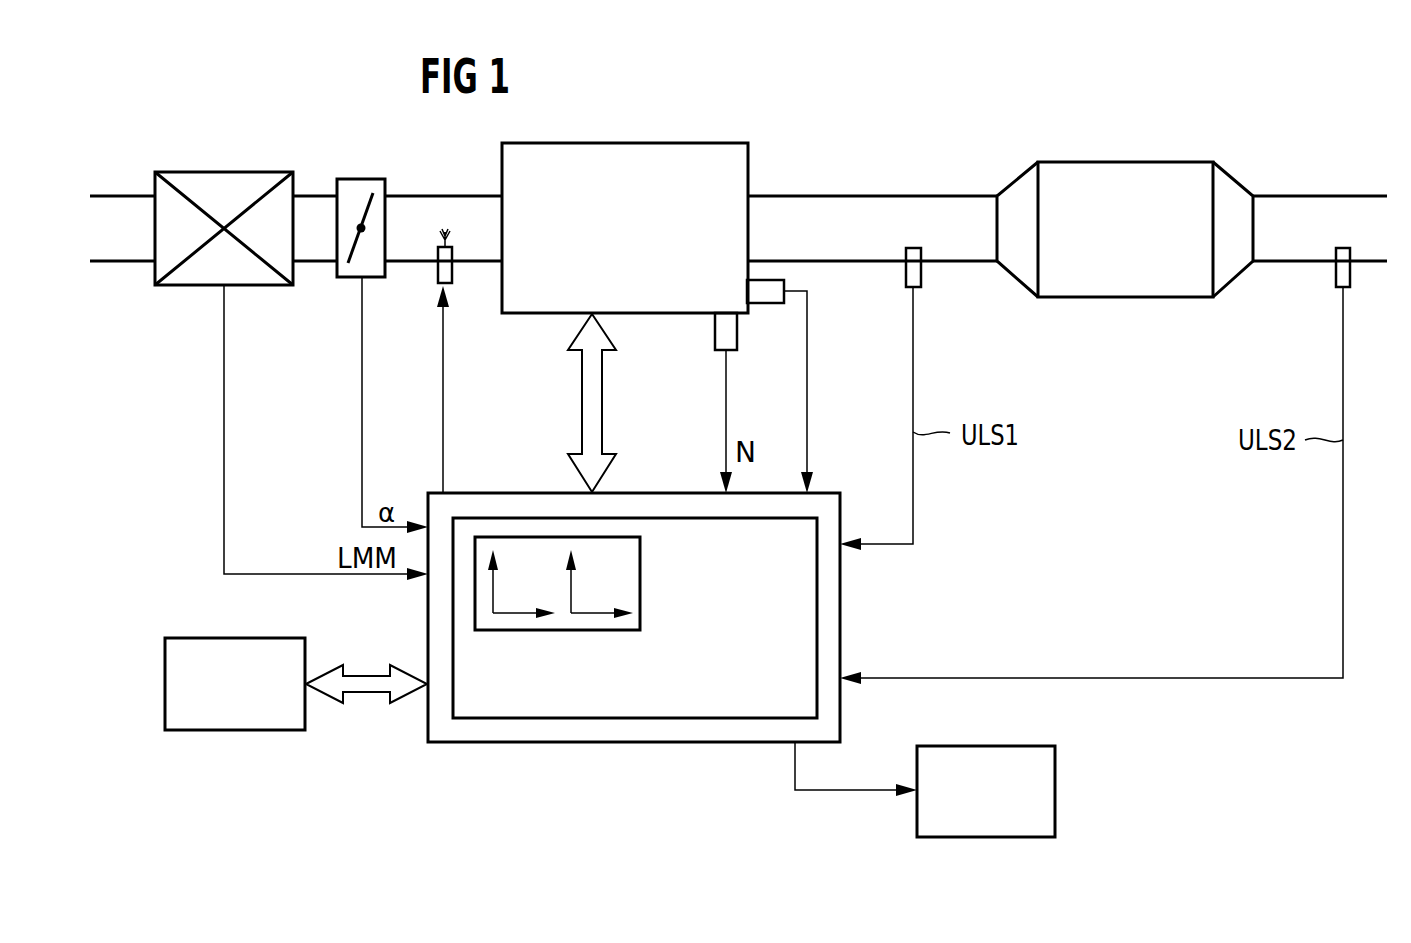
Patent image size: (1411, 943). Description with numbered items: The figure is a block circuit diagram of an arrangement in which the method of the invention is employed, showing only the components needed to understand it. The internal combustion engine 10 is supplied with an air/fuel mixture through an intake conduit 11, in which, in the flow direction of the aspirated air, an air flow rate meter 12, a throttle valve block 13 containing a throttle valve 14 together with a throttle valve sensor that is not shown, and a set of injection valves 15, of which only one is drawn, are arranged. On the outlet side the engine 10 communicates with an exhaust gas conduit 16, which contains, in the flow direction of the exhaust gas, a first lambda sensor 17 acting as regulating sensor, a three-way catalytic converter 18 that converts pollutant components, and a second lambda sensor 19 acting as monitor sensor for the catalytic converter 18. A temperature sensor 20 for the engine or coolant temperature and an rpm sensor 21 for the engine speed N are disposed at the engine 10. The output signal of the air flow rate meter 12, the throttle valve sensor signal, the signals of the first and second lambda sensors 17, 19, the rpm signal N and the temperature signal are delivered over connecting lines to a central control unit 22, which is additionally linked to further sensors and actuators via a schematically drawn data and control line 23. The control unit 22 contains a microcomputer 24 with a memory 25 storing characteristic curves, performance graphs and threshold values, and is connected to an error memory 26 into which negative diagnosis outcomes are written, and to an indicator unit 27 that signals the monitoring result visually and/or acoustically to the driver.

The internal combustion engine 10 is at (623, 142).
The intake conduit 11 is at (115, 195).
The air flow rate meter 12 is at (225, 171).
The throttle valve block 13 is at (363, 178).
The throttle valve 14 is at (362, 264).
The injection valves 15 is at (452, 264).
The exhaust gas conduit 16 is at (848, 195).
The first lambda sensor 17 is at (905, 270).
The three-way catalytic converter 18 is at (1128, 161).
The second lambda sensor 19 is at (1335, 275).
The temperature sensor 20 is at (772, 304).
The rpm sensor 21 is at (712, 338).
The central control unit 22 is at (555, 743).
The data and control line 23 is at (580, 405).
The microcomputer 24 is at (817, 615).
The memory 25 is at (640, 585).
The error memory 26 is at (232, 731).
The indicator unit 27 is at (1057, 790).